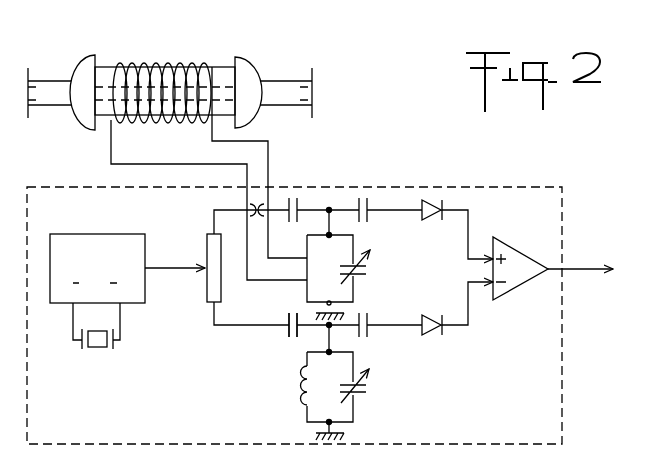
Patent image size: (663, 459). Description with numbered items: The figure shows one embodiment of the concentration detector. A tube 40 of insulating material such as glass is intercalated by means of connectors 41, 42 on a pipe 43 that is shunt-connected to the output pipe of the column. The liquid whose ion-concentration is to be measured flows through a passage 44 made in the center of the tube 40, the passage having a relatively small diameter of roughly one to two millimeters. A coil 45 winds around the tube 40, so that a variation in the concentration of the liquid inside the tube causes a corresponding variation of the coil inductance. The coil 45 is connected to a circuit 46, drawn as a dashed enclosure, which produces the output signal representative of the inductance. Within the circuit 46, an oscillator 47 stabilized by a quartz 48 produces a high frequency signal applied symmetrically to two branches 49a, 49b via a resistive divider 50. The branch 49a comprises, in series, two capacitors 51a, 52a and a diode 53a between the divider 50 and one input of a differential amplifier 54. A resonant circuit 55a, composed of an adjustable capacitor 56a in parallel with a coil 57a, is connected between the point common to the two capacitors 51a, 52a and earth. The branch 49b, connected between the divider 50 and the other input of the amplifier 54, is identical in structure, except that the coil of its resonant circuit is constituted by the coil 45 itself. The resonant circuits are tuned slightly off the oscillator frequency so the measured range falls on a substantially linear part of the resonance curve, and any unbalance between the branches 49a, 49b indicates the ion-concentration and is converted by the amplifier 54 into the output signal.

The tube 40 is at (220, 67).
The connector 41 is at (80, 64).
The connector 42 is at (248, 75).
The pipe 43 is at (290, 90).
The passage 44 is at (106, 86).
The coil 45 is at (150, 65).
The circuit 46 is at (395, 184).
The oscillator 47 is at (127, 268).
The quartz 48 is at (92, 357).
The branch 49a is at (228, 335).
The branch 49b is at (240, 200).
The resistive divider 50 is at (207, 249).
The capacitor 51a is at (292, 328).
The capacitor 52a is at (368, 218).
The diode 53a is at (437, 328).
The differential amplifier 54 is at (522, 280).
The resonant circuit 55a is at (323, 382).
The adjustable capacitor 56a is at (368, 388).
The coil 57a is at (302, 395).